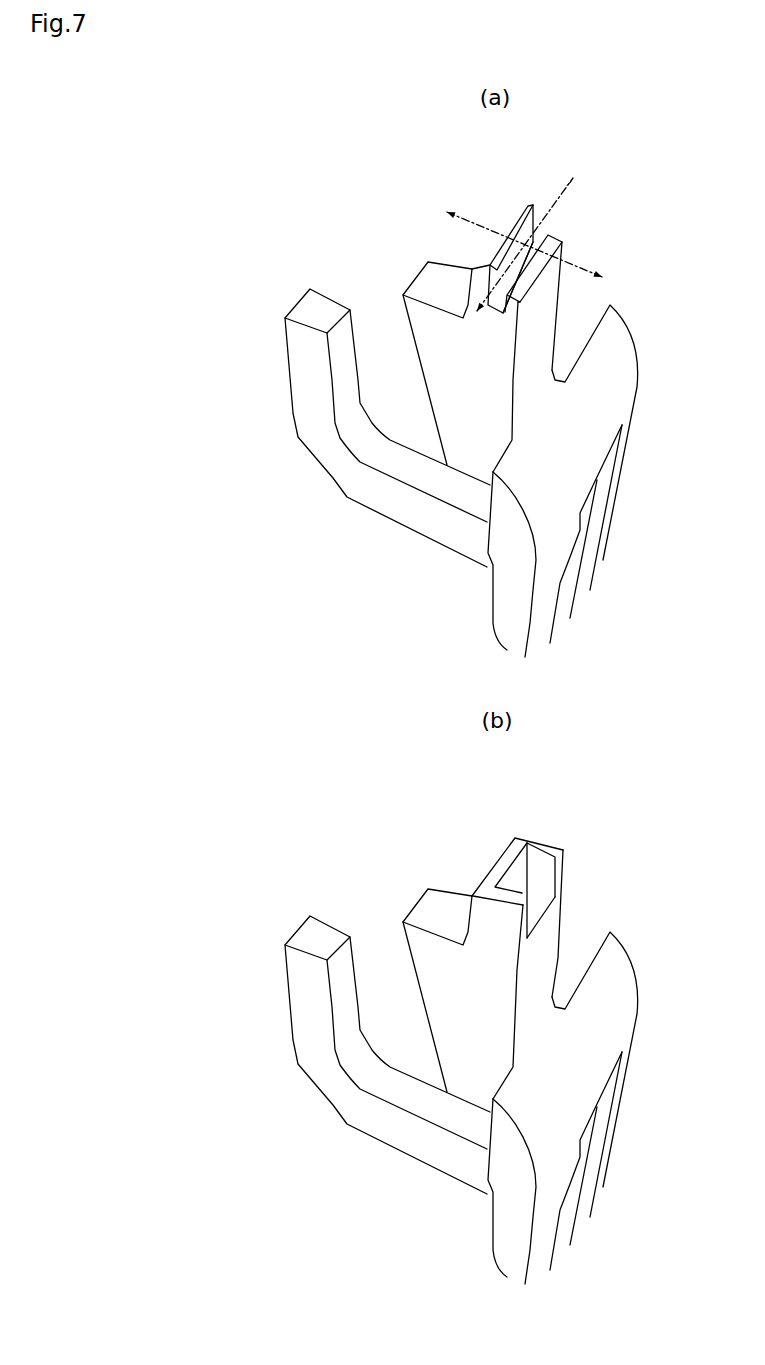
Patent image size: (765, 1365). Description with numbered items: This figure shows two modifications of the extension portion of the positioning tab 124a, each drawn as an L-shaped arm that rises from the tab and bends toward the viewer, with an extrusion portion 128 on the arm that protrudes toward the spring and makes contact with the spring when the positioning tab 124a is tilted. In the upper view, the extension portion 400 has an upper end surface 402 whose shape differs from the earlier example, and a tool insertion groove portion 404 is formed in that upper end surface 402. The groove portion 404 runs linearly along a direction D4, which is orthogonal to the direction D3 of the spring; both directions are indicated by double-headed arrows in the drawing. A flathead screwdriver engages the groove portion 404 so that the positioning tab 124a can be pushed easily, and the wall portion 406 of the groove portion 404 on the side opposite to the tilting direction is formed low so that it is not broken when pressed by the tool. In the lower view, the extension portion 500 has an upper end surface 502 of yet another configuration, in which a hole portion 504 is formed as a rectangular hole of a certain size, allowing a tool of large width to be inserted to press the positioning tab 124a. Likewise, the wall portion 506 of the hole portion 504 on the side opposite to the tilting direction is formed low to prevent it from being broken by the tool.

The positioning tab 124a is at (402, 218).
The extrusion portion 128 is at (400, 327).
The extension portion 400 is at (543, 303).
The upper end surface 402 is at (560, 238).
The tool insertion groove portion 404 is at (537, 213).
The wall portion 406 is at (560, 247).
The extension portion 500 is at (543, 930).
The upper end surface 502 is at (562, 848).
The hole portion 504 is at (525, 848).
The wall portion 506 is at (547, 902).
The direction of the spring D3 is at (472, 222).
The direction orthogonal to the direction of the spring D4 is at (580, 192).